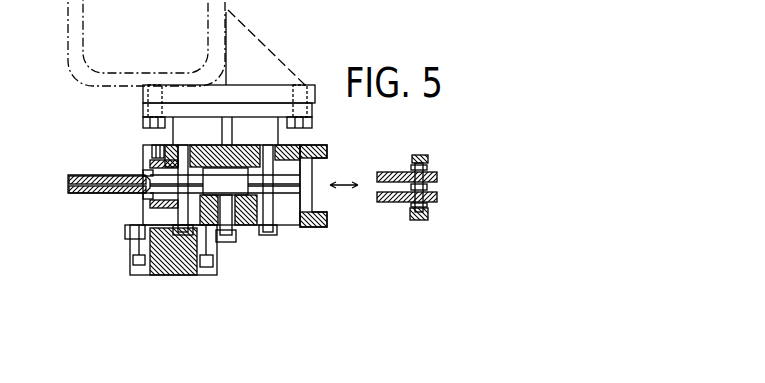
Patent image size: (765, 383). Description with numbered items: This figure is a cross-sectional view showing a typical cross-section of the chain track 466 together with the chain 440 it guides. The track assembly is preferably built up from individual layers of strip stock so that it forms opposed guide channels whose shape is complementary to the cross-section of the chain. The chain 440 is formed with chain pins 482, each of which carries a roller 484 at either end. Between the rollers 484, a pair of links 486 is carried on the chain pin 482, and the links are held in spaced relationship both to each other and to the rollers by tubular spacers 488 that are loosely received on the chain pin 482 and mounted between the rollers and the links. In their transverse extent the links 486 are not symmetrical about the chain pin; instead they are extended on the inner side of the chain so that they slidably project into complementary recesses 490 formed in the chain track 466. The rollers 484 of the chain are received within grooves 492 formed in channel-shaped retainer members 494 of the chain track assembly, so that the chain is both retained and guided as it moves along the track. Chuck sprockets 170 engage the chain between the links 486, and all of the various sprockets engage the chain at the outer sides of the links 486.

The chuck sprocket 170 is at (88, 177).
The chain 440 is at (418, 186).
The chain track 466 is at (287, 245).
The chain pin 482 is at (430, 210).
The roller 484 is at (420, 155).
The link 486 is at (378, 172).
The tubular spacer 488 is at (410, 172).
The recess 490 is at (150, 175).
The groove 492 is at (130, 152).
The channel-shaped retainer member 494 is at (156, 143).